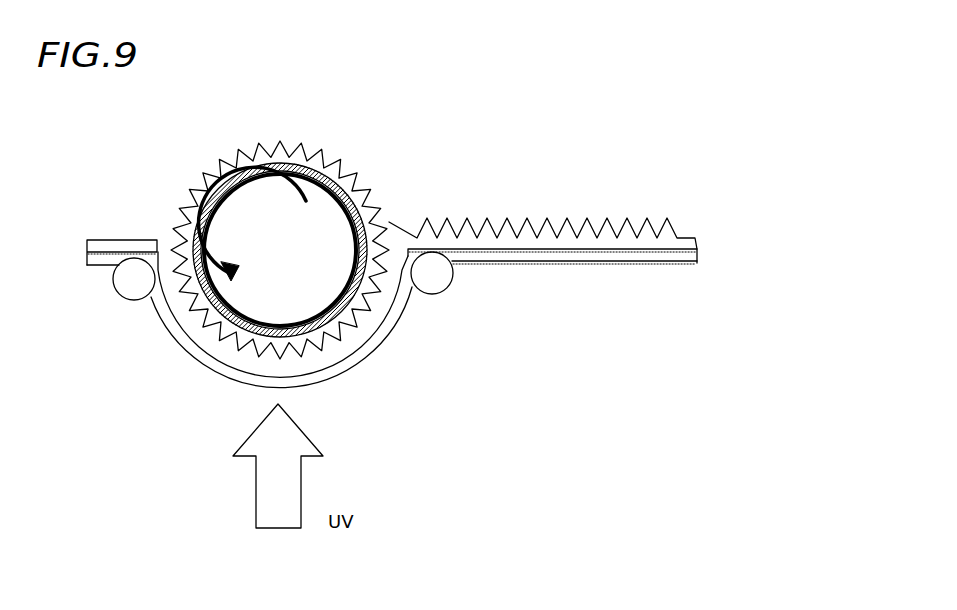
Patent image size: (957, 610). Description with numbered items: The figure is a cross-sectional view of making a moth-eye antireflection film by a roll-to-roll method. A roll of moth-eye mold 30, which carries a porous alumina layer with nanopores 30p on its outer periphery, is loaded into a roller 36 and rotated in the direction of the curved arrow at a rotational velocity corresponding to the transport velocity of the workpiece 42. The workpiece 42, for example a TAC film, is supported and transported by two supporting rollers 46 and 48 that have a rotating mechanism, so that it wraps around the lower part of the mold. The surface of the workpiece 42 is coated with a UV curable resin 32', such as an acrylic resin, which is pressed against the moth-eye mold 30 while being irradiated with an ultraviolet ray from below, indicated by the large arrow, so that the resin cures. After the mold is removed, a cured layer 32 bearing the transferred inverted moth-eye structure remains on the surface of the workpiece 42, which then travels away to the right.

The moth-eye mold 30 is at (310, 150).
The nanopores 30p is at (272, 150).
The roller 36 is at (313, 243).
The UV curable resin 32' is at (122, 211).
The cured layer 32 is at (543, 200).
The workpiece 42 is at (87, 262).
The supporting roller 46 is at (128, 288).
The supporting roller 48 is at (445, 278).